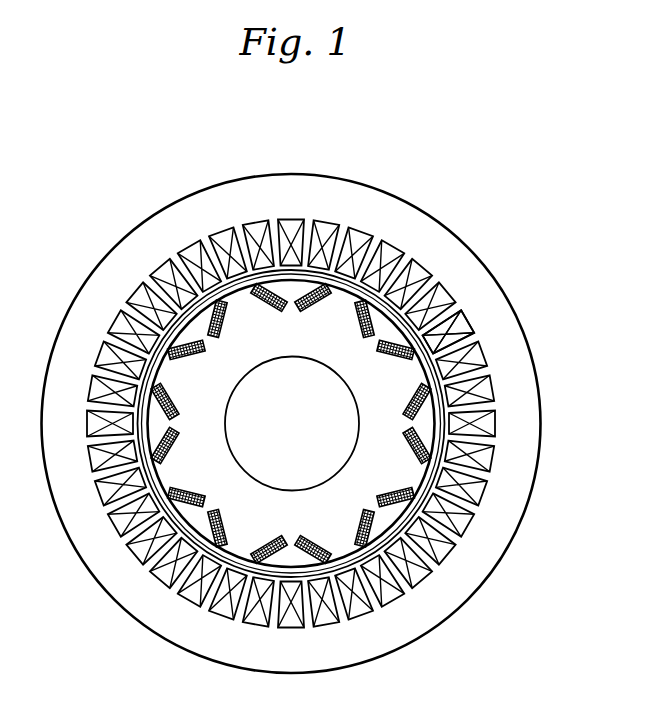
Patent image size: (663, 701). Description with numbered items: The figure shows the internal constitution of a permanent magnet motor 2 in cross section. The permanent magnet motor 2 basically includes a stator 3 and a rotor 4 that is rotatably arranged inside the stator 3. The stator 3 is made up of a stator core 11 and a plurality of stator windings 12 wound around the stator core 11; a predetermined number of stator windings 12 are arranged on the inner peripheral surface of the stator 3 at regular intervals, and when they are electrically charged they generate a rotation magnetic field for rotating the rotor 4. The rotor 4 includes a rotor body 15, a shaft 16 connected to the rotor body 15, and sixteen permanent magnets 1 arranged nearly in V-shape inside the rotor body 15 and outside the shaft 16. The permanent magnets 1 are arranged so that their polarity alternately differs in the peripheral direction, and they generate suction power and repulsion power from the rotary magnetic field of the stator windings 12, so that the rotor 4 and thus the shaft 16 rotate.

The permanent magnet 1 is at (264, 304).
The permanent magnet motor 2 is at (310, 395).
The stator 3 is at (332, 413).
The rotor 4 is at (291, 423).
The stator core 11 is at (462, 267).
The stator winding 12 is at (467, 325).
The rotor body 15 is at (415, 377).
The shaft 16 is at (330, 412).